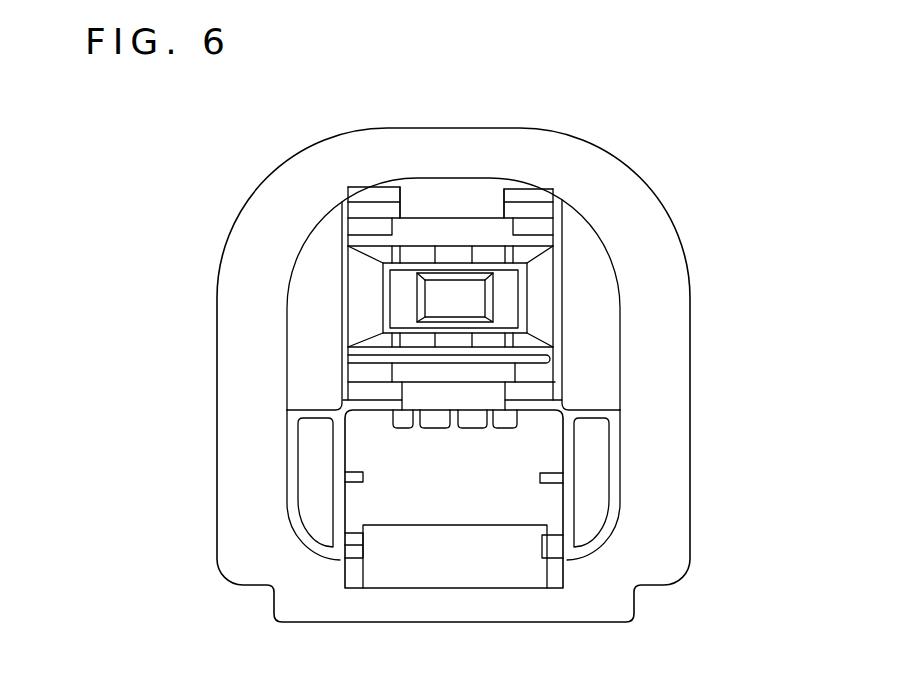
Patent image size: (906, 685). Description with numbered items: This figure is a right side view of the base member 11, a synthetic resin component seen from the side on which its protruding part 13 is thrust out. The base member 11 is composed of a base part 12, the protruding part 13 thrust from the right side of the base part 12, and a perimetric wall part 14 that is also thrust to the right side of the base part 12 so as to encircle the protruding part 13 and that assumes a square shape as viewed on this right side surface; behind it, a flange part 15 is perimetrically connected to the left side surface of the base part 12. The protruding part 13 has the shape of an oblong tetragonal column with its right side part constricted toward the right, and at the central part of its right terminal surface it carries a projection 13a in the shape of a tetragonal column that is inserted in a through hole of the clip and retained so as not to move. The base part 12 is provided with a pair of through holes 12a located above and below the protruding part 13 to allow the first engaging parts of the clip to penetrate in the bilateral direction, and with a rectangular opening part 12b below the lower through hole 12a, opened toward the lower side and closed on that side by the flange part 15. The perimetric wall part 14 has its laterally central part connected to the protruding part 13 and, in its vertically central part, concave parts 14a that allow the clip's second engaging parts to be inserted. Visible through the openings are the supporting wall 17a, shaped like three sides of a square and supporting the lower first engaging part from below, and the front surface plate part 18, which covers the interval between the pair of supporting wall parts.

The base member 11 is at (697, 508).
The base part 12 is at (300, 284).
The through hole 12a is at (433, 235).
The rectangular opening part 12b is at (497, 578).
The protruding part 13 is at (538, 293).
The projection 13a is at (473, 308).
The perimetric wall part 14 is at (360, 215).
The concave part 14a is at (475, 197).
The flange part 15 is at (617, 181).
The supporting wall 17a is at (415, 372).
The front surface plate part 18 is at (438, 508).